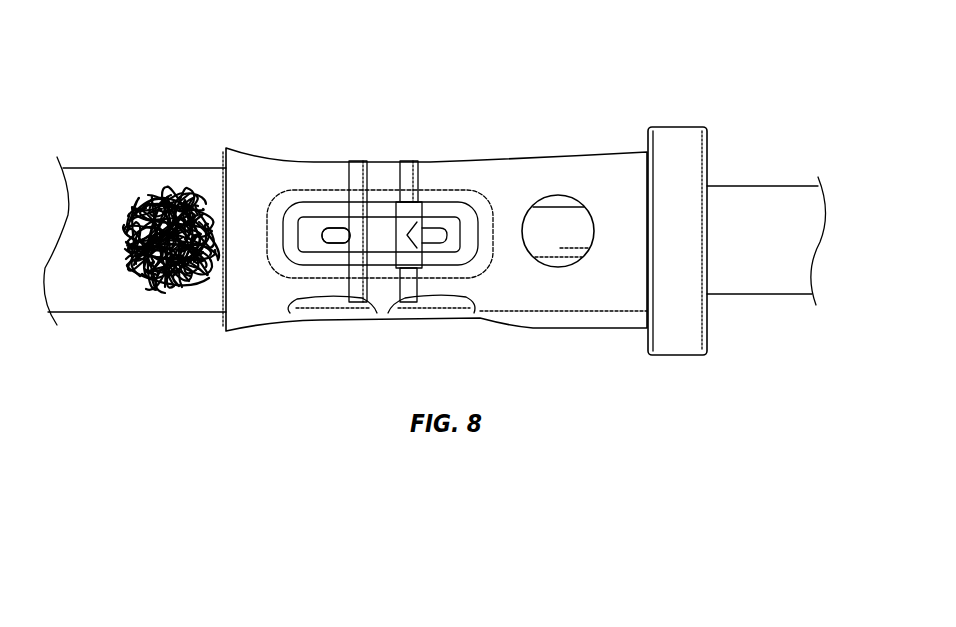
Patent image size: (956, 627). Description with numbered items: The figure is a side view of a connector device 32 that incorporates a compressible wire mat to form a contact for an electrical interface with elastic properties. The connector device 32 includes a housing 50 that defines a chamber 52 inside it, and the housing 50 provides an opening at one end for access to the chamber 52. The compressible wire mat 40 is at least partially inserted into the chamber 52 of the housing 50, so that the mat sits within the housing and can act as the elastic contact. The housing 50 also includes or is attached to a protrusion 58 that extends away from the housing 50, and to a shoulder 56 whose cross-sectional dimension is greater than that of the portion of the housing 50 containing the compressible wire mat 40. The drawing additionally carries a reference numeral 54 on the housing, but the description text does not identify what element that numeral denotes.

The connector device 32 is at (185, 88).
The compressible wire mat 40 is at (168, 190).
The housing 50 is at (273, 152).
The chamber 52 is at (557, 227).
The slot 54 is at (335, 237).
The shoulder 56 is at (677, 125).
The protrusion 58 is at (762, 186).